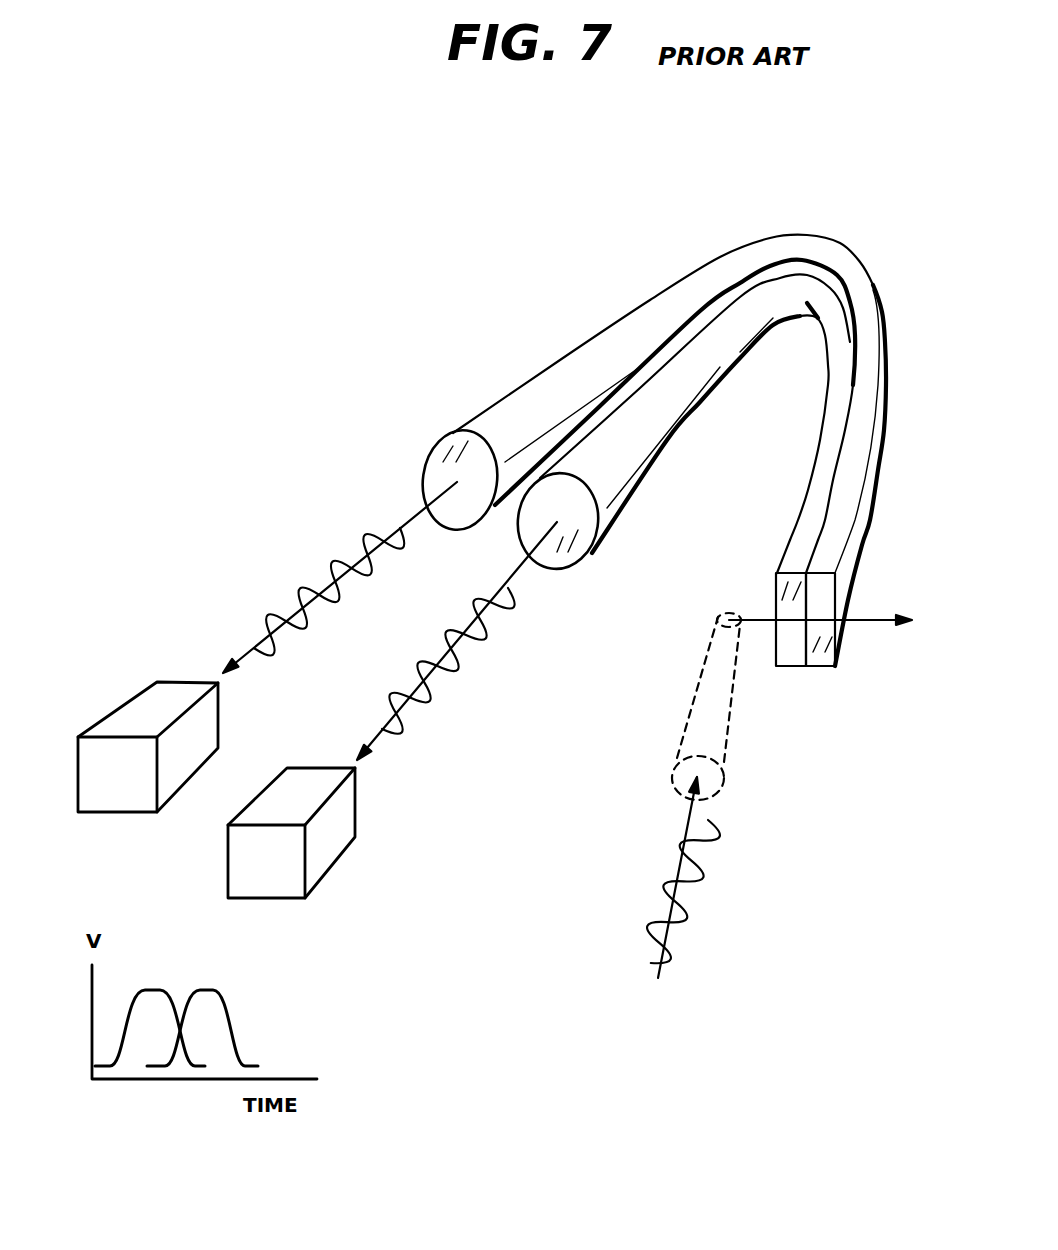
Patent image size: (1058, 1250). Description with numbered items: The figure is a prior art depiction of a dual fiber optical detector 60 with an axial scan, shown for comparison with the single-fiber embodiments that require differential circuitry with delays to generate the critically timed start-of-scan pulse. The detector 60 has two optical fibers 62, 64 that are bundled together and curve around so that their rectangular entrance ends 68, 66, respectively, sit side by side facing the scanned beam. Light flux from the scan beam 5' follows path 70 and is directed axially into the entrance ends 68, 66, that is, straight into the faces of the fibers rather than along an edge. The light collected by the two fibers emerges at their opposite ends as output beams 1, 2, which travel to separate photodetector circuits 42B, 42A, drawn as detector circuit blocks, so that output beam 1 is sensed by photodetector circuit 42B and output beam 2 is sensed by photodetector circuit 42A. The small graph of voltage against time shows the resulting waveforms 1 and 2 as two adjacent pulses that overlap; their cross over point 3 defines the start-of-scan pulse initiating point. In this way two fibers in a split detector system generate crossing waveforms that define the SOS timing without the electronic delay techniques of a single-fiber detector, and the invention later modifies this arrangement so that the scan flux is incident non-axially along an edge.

The prior art detector 60 is at (582, 288).
The fiber 62 is at (428, 475).
The fiber 64 is at (573, 528).
The rectangular entrance end 66 is at (792, 652).
The rectangular entrance end 68 is at (838, 655).
The path 70 is at (870, 618).
The scan beam 5' is at (707, 795).
The output beam 2 is at (340, 577).
The output beam 1 is at (457, 641).
The photodetector circuit 42A is at (152, 712).
The photodetector circuit 42B is at (328, 838).
The cross over point 3 is at (177, 1020).